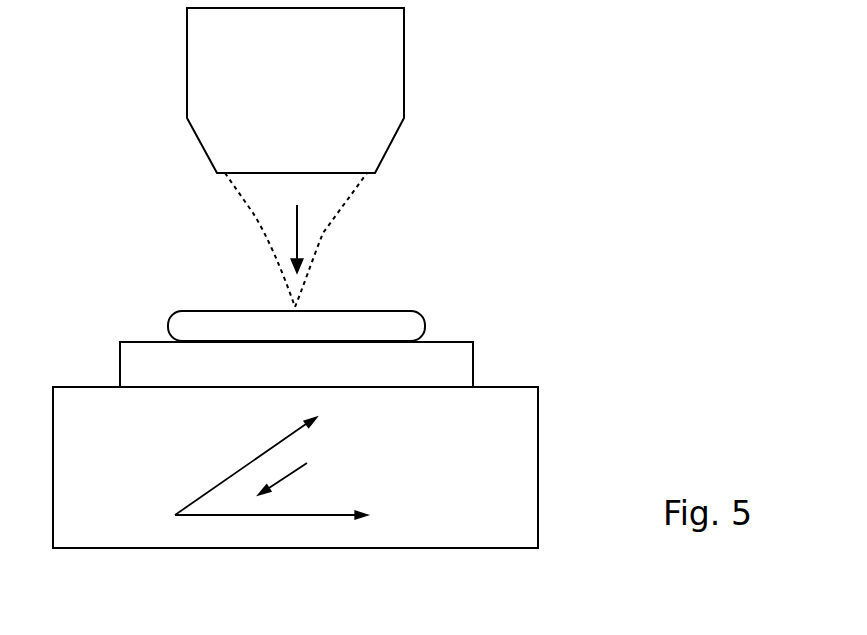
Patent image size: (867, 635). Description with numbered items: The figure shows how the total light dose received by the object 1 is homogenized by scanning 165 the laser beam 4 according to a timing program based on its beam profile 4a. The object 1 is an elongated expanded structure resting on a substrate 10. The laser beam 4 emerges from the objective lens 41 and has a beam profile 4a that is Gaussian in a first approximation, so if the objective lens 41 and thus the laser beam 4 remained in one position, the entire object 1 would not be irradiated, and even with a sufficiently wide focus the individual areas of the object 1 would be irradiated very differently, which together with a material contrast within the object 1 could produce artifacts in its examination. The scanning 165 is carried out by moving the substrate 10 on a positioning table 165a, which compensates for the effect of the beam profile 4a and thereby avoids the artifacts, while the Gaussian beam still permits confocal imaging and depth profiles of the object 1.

The objective lens 41 is at (404, 32).
The laser beam 4 is at (298, 228).
The beam profile 4a is at (253, 213).
The object 1 is at (423, 322).
The substrate 10 is at (473, 365).
The positioning table 165a is at (538, 443).
The scanning 165 is at (307, 463).